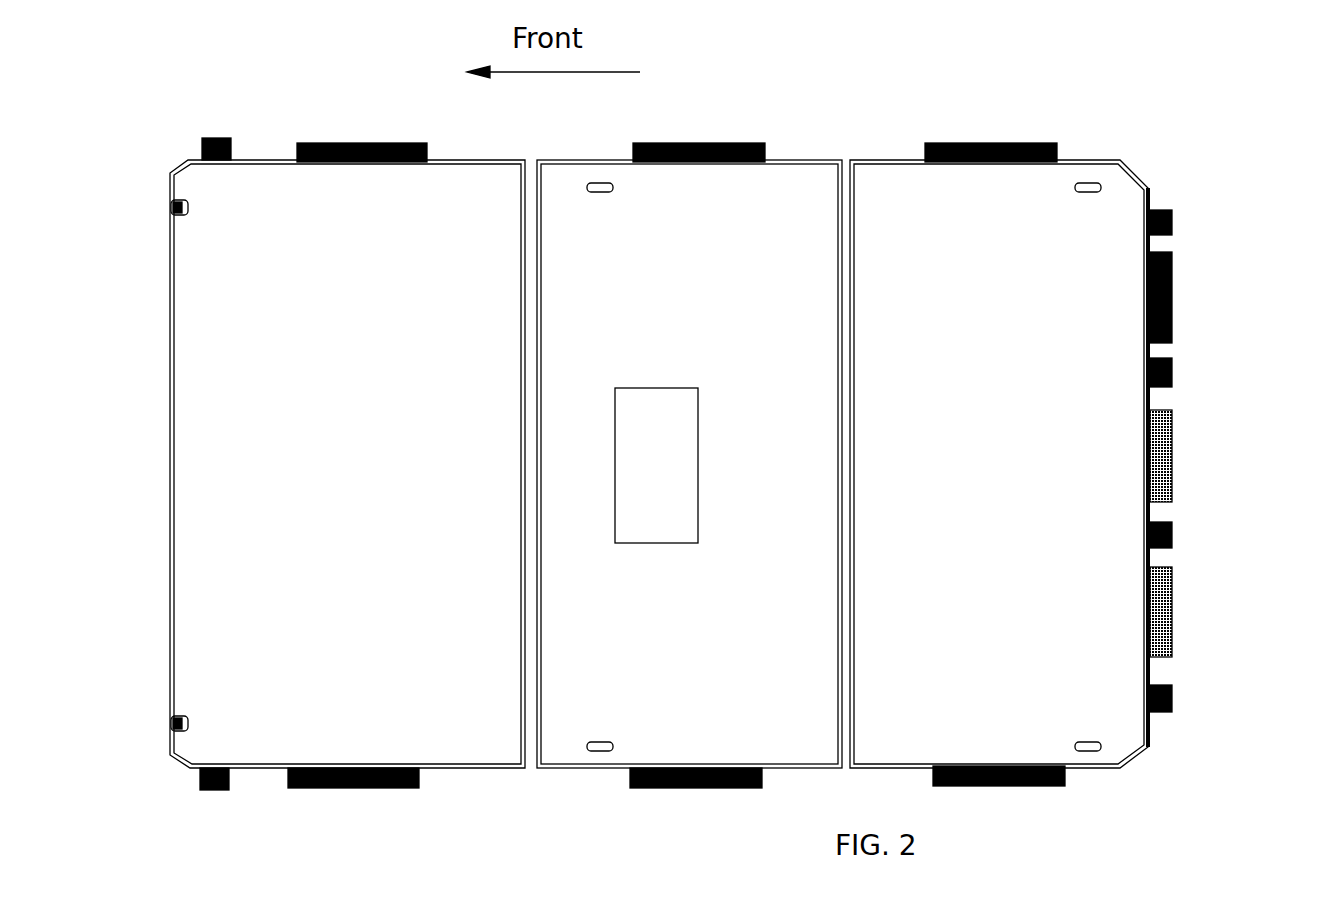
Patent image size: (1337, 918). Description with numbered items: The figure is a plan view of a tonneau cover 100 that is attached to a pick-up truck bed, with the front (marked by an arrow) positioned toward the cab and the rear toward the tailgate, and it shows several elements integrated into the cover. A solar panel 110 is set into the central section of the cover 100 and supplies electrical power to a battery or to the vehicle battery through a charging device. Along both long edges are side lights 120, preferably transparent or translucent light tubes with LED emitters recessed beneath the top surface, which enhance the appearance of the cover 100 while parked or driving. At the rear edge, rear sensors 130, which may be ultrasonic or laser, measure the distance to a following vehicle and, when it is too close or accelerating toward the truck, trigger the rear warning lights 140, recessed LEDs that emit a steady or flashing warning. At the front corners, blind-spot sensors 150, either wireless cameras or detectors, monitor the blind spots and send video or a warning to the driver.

The tonneau cover 100 is at (383, 370).
The solar panel 110 is at (656, 465).
The side lights 120 is at (370, 143).
The rear sensors 130 is at (1172, 222).
The rear warning lights 140 is at (1172, 295).
The blind-spot sensors 150 is at (208, 138).